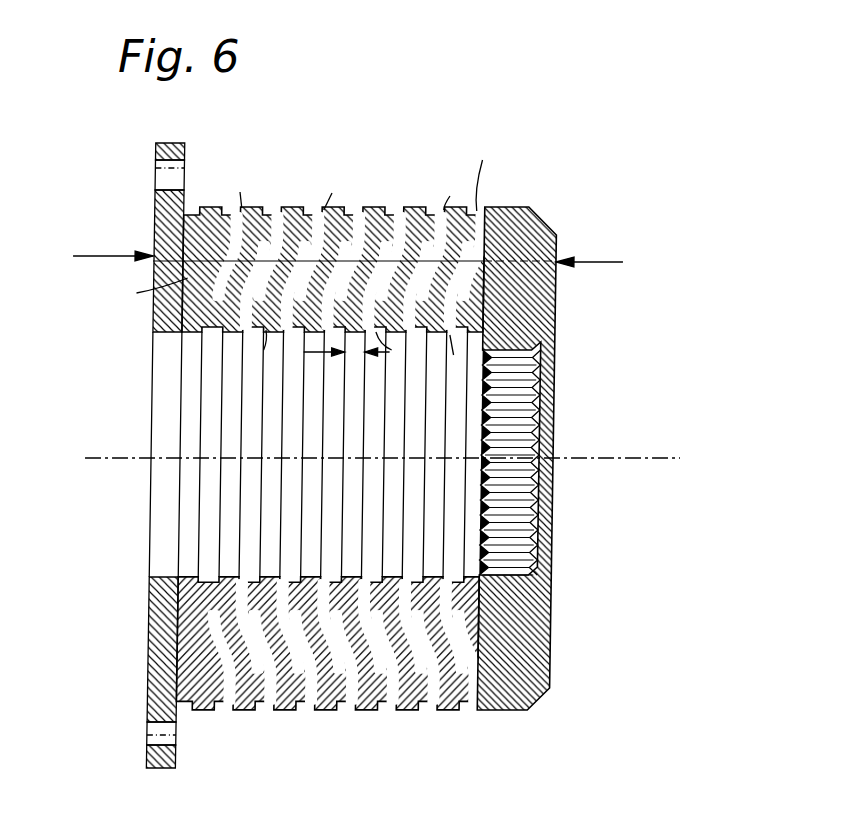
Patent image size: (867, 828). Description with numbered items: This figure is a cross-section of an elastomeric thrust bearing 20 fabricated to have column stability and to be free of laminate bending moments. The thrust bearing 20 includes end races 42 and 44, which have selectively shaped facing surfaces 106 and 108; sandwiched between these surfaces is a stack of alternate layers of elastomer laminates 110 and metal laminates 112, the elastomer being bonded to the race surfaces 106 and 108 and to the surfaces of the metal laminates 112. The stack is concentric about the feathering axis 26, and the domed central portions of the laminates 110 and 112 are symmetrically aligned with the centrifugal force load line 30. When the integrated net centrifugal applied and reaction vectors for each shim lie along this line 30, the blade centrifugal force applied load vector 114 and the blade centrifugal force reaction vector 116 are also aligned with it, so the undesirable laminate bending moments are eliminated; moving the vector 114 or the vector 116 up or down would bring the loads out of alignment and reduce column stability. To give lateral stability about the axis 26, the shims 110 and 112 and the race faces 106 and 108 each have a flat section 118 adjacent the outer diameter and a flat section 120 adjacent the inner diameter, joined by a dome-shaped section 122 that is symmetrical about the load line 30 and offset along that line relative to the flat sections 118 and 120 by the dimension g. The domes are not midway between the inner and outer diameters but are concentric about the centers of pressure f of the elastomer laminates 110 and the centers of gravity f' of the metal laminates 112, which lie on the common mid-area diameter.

The thrust bearing 20 is at (356, 431).
The feathering axis 26 is at (618, 458).
The centrifugal force load line 30 is at (258, 209).
The end race 42 is at (545, 232).
The end race 44 is at (152, 152).
The facing surface 106 is at (480, 212).
The facing surface 108 is at (189, 213).
The elastomer laminates 110 is at (196, 206).
The metal laminates 112 is at (339, 209).
The blade centrifugal force applied load vector 114 is at (610, 265).
The blade centrifugal force reaction vector 116 is at (102, 258).
The flat section 118 is at (302, 208).
The flat section 120 is at (181, 333).
The dome-shaped section 122 is at (364, 210).